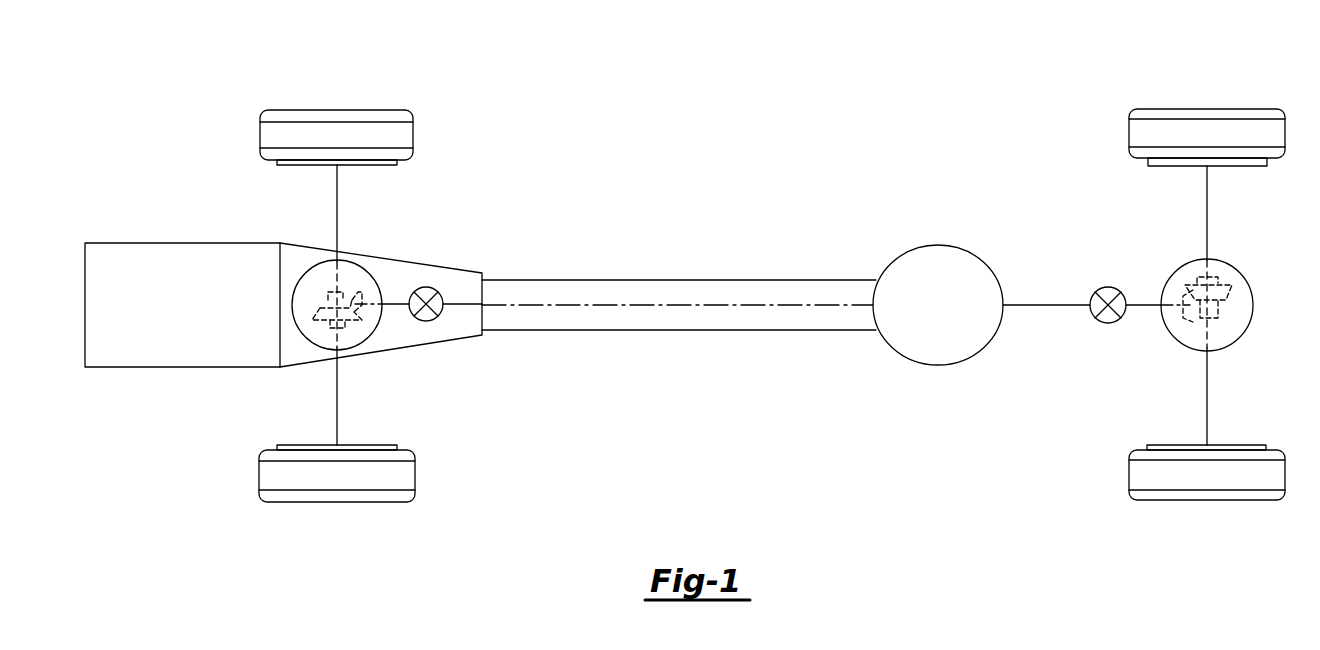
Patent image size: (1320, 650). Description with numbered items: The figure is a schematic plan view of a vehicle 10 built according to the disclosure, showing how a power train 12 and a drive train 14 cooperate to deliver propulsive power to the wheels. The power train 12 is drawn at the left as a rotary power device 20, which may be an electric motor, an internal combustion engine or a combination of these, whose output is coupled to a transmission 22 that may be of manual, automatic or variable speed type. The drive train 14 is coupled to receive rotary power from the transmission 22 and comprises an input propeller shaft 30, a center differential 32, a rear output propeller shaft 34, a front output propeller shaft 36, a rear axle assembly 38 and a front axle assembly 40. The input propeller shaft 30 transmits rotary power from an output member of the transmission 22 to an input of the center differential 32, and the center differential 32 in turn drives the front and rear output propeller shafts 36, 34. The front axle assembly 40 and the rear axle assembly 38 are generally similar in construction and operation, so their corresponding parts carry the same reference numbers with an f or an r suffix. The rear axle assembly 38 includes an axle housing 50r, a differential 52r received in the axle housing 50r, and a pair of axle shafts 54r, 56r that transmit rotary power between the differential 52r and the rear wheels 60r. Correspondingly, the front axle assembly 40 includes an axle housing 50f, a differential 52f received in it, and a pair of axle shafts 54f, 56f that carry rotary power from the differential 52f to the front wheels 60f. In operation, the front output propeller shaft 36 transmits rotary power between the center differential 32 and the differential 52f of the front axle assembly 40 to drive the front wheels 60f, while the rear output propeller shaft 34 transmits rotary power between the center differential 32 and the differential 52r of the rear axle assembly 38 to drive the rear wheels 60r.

The vehicle 10 is at (696, 86).
The power train 12 is at (195, 228).
The drive train 14 is at (611, 273).
The rotary power device 20 is at (165, 363).
The transmission 22 is at (352, 355).
The input propeller shaft 30 is at (760, 280).
The center differential 32 is at (933, 245).
The rear output propeller shaft 34 is at (1045, 305).
The front output propeller shaft 36 is at (657, 304).
The rear axle assembly 38 is at (1172, 254).
The front axle assembly 40 is at (364, 221).
The axle housing 50f is at (378, 327).
The axle housing 50r is at (1188, 346).
The differential 52f is at (320, 300).
The differential 52r is at (1171, 290).
The axle shaft 54f is at (337, 412).
The axle shaft 54r is at (1207, 412).
The axle shaft 56f is at (337, 214).
The axle shaft 56r is at (1207, 212).
The front wheels 60f is at (413, 97).
The rear wheels 60r is at (1146, 98).